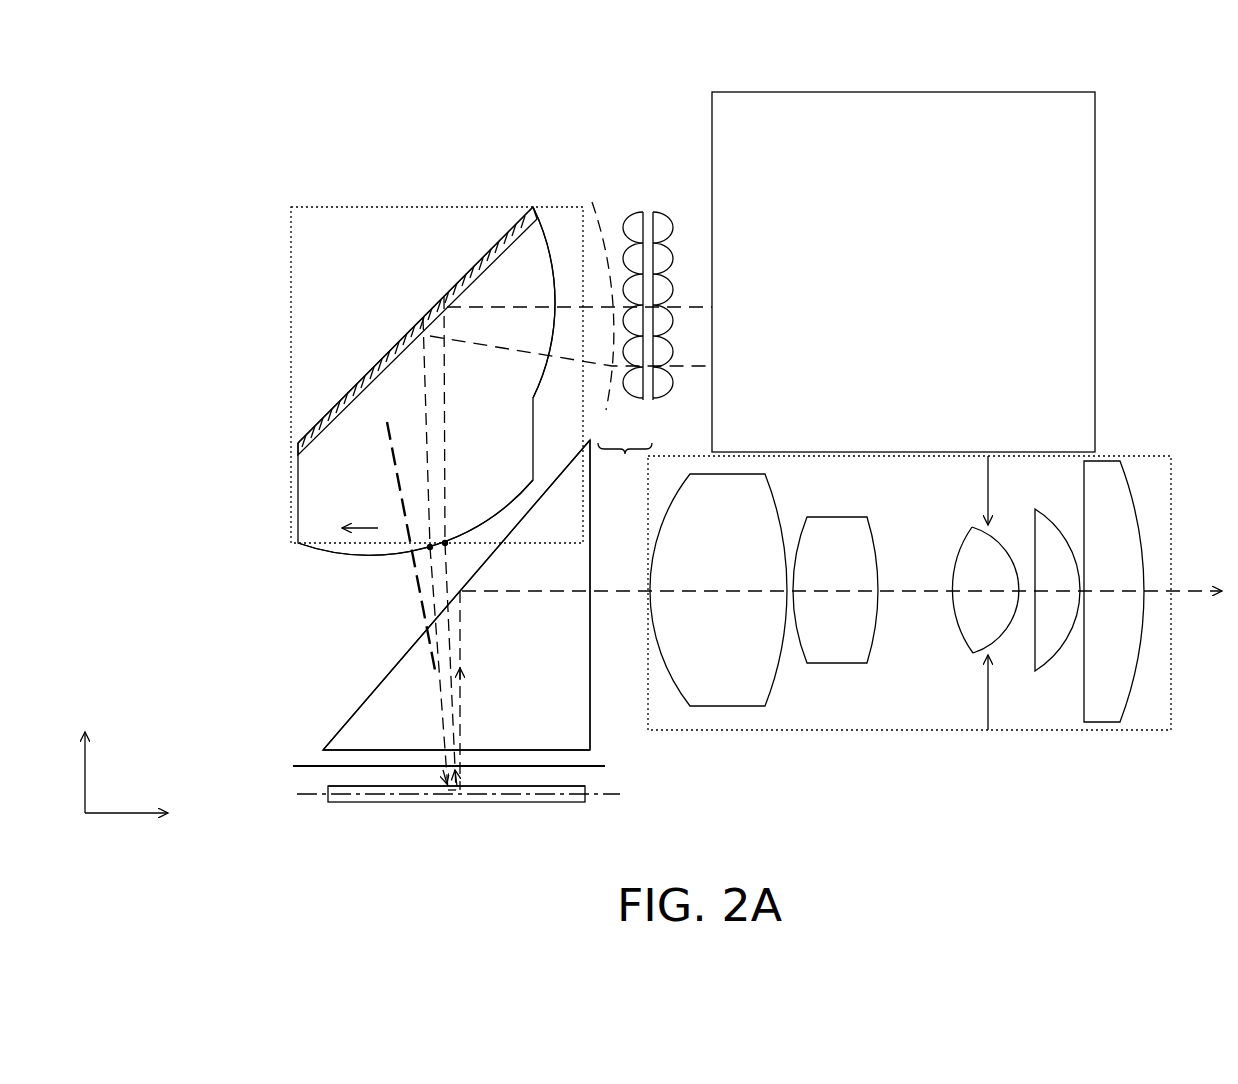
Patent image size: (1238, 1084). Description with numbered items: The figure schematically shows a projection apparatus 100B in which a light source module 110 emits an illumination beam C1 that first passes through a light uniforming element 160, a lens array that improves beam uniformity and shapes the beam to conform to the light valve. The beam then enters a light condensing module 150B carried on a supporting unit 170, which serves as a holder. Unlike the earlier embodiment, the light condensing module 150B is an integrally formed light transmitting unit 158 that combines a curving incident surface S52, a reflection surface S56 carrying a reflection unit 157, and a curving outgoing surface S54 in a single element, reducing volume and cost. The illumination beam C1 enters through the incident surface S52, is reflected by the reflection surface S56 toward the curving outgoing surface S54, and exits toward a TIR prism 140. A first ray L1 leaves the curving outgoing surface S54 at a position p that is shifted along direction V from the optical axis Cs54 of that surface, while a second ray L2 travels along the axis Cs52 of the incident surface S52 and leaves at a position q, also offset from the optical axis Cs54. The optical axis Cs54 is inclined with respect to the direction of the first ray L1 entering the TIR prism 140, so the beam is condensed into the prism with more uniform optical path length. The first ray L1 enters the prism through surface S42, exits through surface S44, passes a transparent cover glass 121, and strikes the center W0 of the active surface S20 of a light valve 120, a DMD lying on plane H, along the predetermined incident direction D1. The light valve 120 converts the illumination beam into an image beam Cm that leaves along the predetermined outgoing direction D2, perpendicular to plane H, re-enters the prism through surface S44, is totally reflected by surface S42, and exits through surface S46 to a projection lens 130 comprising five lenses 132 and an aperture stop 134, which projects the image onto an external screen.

The projection apparatus 100B is at (1215, 845).
The light source module 110 is at (1095, 285).
The light uniforming element 160 is at (654, 190).
The first ray L1 is at (650, 329).
The second ray L2 is at (610, 329).
The illumination beam C1 is at (625, 464).
The supporting unit 170 is at (288, 237).
The light condensing module 150B is at (322, 178).
The light transmitting unit 158 is at (355, 545).
The curving outgoing surface S54 is at (311, 549).
The incident surface S52 is at (550, 233).
The reflection unit 157 is at (322, 415).
The reflection surface S56 is at (482, 300).
The optical axis of the incident surface Cs52 is at (595, 290).
The optical axis of the curving outgoing surface Cs54 is at (387, 455).
The direction V is at (360, 510).
The position q is at (447, 540).
The position p is at (427, 548).
The image beam Cm is at (524, 594).
The TIR prism 140 is at (326, 753).
The surface S42 is at (354, 709).
The surface S46 is at (593, 670).
The surface S44 is at (321, 750).
The transparent cover glass 121 is at (605, 766).
The light valve 120 is at (570, 798).
The active surface S20 is at (580, 783).
The plane H is at (446, 796).
The predetermined incident direction D1 is at (447, 765).
The predetermined outgoing direction D2 is at (468, 770).
The center of the active surface W0 is at (458, 790).
The projection lens 130 is at (1085, 732).
The lenses 132 is at (745, 688).
The aperture stop 134 is at (988, 720).